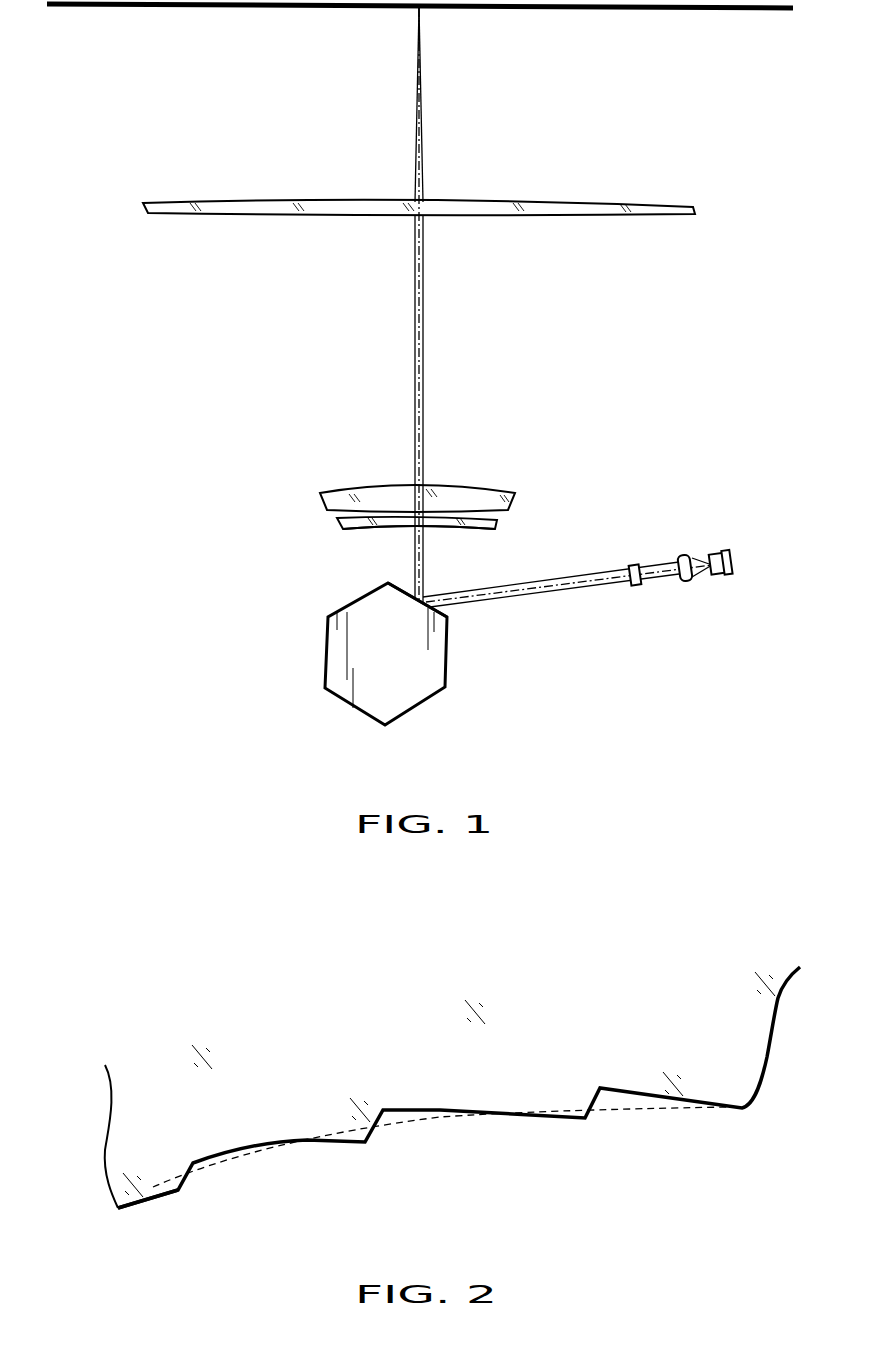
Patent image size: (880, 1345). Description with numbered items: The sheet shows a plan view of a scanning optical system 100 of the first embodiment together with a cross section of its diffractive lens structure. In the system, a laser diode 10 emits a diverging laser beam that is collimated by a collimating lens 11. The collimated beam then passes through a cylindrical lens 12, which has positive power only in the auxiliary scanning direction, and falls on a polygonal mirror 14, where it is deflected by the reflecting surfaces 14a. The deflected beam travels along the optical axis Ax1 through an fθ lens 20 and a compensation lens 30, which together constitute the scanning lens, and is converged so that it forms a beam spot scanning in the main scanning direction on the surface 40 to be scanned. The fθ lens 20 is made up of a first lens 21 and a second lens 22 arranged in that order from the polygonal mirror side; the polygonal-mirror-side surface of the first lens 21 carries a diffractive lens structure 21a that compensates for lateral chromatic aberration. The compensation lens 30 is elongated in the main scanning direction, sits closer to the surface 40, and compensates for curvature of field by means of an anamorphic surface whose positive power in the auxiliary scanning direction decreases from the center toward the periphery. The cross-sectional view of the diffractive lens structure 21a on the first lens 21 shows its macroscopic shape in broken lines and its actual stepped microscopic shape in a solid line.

In FIG. 1, the scanning optical system 100 is at (675, 364).
In FIG. 1, the surface to be scanned 40 is at (545, 8).
In FIG. 1, the optical axis Ax1 is at (420, 402).
In FIG. 1, the compensation lens 30 is at (323, 215).
In FIG. 1, the fθ lens 20 is at (233, 473).
In FIG. 1, the second lens 22 is at (323, 492).
In FIG. 1, the first lens 21 is at (337, 525).
In FIG. 2, the first lens 21 is at (147, 1108).
In FIG. 1, the diffractive lens structure 21a is at (453, 531).
In FIG. 2, the diffractive lens structure 21a is at (157, 1198).
In FIG. 1, the polygonal mirror 14 is at (337, 653).
In FIG. 1, the reflecting surfaces 14a is at (437, 612).
In FIG. 1, the cylindrical lens 12 is at (637, 586).
In FIG. 1, the collimating lens 11 is at (685, 554).
In FIG. 1, the laser diode 10 is at (717, 577).